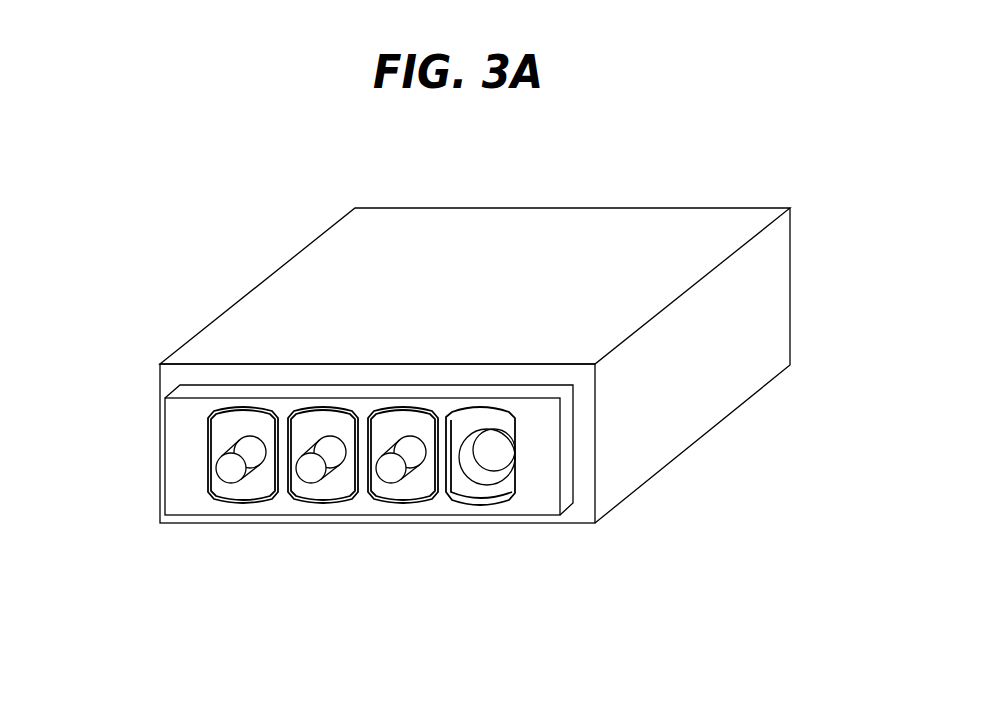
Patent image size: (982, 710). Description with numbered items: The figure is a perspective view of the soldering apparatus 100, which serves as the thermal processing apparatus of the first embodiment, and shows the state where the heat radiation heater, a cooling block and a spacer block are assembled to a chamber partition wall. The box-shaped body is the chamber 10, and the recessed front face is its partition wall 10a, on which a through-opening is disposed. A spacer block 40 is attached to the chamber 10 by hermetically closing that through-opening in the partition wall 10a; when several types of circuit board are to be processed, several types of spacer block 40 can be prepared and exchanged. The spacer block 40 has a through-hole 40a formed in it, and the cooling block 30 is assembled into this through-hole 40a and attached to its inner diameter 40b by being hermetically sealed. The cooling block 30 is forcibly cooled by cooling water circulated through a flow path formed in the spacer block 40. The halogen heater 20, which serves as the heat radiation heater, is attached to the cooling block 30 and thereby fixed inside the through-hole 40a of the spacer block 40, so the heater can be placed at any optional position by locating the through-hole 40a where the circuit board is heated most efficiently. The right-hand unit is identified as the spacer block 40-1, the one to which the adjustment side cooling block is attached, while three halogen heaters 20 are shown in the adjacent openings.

The soldering apparatus 100 is at (440, 328).
The chamber 10 is at (440, 365).
The partition wall 10a is at (268, 310).
The halogen heater 20 is at (231, 471).
The cooling block 30 is at (422, 477).
The spacer block 40 is at (551, 522).
The spacer block 40-1 is at (526, 522).
The through-hole 40a is at (460, 465).
The inner diameter 40b is at (470, 463).